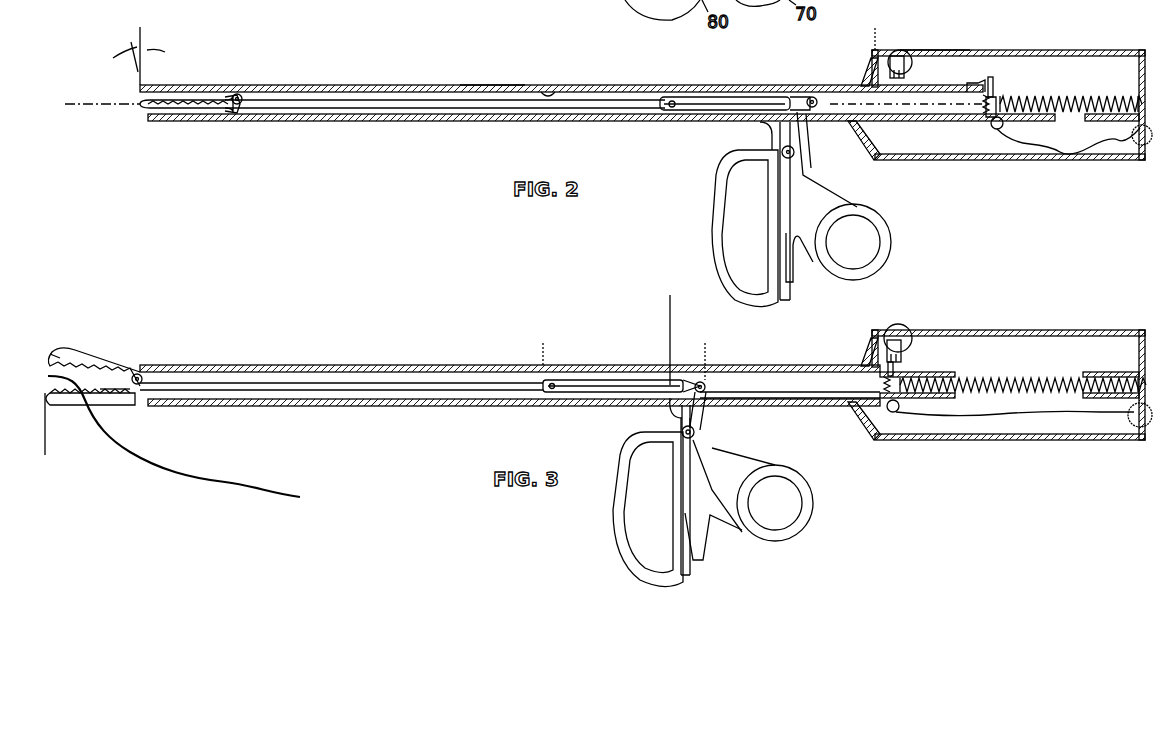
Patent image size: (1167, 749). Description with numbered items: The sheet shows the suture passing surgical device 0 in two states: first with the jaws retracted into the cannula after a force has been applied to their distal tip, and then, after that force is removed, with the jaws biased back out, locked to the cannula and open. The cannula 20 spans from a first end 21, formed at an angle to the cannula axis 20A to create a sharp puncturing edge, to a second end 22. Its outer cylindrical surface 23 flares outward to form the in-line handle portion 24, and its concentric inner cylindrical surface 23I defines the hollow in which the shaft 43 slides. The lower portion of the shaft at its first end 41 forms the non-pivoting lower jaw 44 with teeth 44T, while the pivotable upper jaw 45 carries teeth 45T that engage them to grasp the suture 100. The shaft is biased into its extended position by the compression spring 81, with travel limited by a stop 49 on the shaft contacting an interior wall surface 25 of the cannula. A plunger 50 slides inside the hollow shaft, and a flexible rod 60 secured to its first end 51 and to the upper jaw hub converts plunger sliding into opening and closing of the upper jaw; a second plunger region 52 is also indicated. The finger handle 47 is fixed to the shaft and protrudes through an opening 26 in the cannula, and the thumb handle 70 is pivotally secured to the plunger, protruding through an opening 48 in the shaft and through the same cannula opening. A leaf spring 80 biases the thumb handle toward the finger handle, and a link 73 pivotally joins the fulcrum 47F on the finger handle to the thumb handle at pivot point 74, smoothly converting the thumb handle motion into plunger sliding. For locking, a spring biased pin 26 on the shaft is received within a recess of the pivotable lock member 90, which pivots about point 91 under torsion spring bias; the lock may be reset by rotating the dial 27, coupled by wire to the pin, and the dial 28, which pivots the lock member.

In FIG. 2, the surgical instrument 0 is at (132, 57).
In FIG. 2, the cannula 20 is at (420, 85).
In FIG. 3, the cannula 20 is at (765, 365).
In FIG. 2, the cannula axis 20A is at (107, 112).
In FIG. 2, the first end of the cannula 21 is at (137, 45).
In FIG. 2, the second end of the cannula 22 is at (1145, 45).
In FIG. 3, the second end of the cannula 22 is at (996, 385).
In FIG. 2, the outer cylindrical surface 23 is at (487, 85).
In FIG. 2, the inner cylindrical surface 23I is at (548, 91).
In FIG. 2, the handle portion 24 is at (932, 50).
In FIG. 2, the interior wall surface 25 is at (870, 29).
In FIG. 2, the opening in the cannula / spring biased pin 26 is at (994, 76).
In FIG. 3, the opening in the cannula / spring biased pin 26 is at (818, 405).
In FIG. 3, the dial 27 is at (1130, 432).
In FIG. 3, the dial 28 is at (905, 326).
In FIG. 3, the first end of the shaft 41 is at (52, 437).
In FIG. 2, the shaft 43 is at (925, 125).
In FIG. 3, the shaft 43 is at (818, 372).
In FIG. 3, the lower jaw 44 is at (62, 406).
In FIG. 3, the teeth of the lower jaw 44T is at (125, 396).
In FIG. 3, the upper jaw 45 is at (75, 348).
In FIG. 3, the teeth of the upper jaw 45T is at (50, 352).
In FIG. 2, the finger handle 47 is at (714, 237).
In FIG. 3, the finger handle 47 is at (623, 549).
In FIG. 3, the fulcrum 47F is at (668, 418).
In FIG. 3, the opening in the shaft 48 is at (772, 405).
In FIG. 2, the stop 49 is at (968, 80).
In FIG. 2, the plunger 50 is at (805, 97).
In FIG. 3, the plunger 50 is at (606, 380).
In FIG. 3, the first end of the plunger 51 is at (543, 344).
In FIG. 3, the slider proximal end 52 is at (705, 351).
In FIG. 2, the rod 60 is at (292, 100).
In FIG. 3, the rod 60 is at (248, 383).
In FIG. 2, the thumb handle 70 is at (890, 257).
In FIG. 3, the thumb handle 70 is at (815, 528).
In FIG. 3, the link 73 is at (706, 395).
In FIG. 3, the pivot point 74 is at (700, 434).
In FIG. 2, the leaf spring 80 is at (800, 270).
In FIG. 3, the leaf spring 80 is at (713, 540).
In FIG. 2, the compression spring 81 is at (1073, 95).
In FIG. 3, the compression spring 81 is at (1035, 378).
In FIG. 2, the lock member 90 is at (866, 76).
In FIG. 2, the pivot point of the lock member 91 is at (900, 52).
In FIG. 3, the suture 100 is at (200, 500).